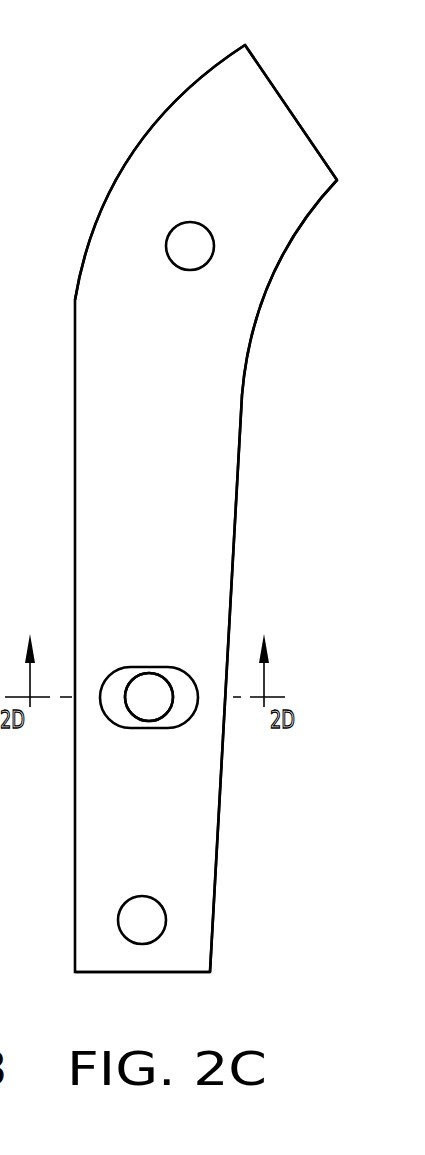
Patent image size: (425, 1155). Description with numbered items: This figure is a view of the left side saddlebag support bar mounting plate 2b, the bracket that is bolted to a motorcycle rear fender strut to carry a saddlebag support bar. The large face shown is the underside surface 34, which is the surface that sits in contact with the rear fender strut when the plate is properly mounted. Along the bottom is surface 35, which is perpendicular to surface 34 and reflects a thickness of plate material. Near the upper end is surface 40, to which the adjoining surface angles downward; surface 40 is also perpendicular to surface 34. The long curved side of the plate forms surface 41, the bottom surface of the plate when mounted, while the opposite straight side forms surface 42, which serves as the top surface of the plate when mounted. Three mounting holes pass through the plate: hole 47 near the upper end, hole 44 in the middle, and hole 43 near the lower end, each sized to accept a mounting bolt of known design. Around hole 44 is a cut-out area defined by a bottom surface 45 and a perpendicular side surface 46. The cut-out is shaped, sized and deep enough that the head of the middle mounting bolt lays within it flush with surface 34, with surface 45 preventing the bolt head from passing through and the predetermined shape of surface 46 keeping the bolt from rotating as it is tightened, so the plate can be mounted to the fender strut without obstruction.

The underside surface 34 is at (182, 368).
The surface 35 is at (140, 974).
The surface 40 is at (273, 83).
The bottom surface 41 is at (253, 332).
The top surface 42 is at (77, 298).
The left side saddlebag support bar mounting plate 2b is at (222, 520).
The hole 43 is at (147, 921).
The hole 44 is at (148, 707).
The bottom surface of cut-out area 45 is at (188, 707).
The cut-out area surface 46 is at (147, 665).
The hole 47 is at (193, 247).